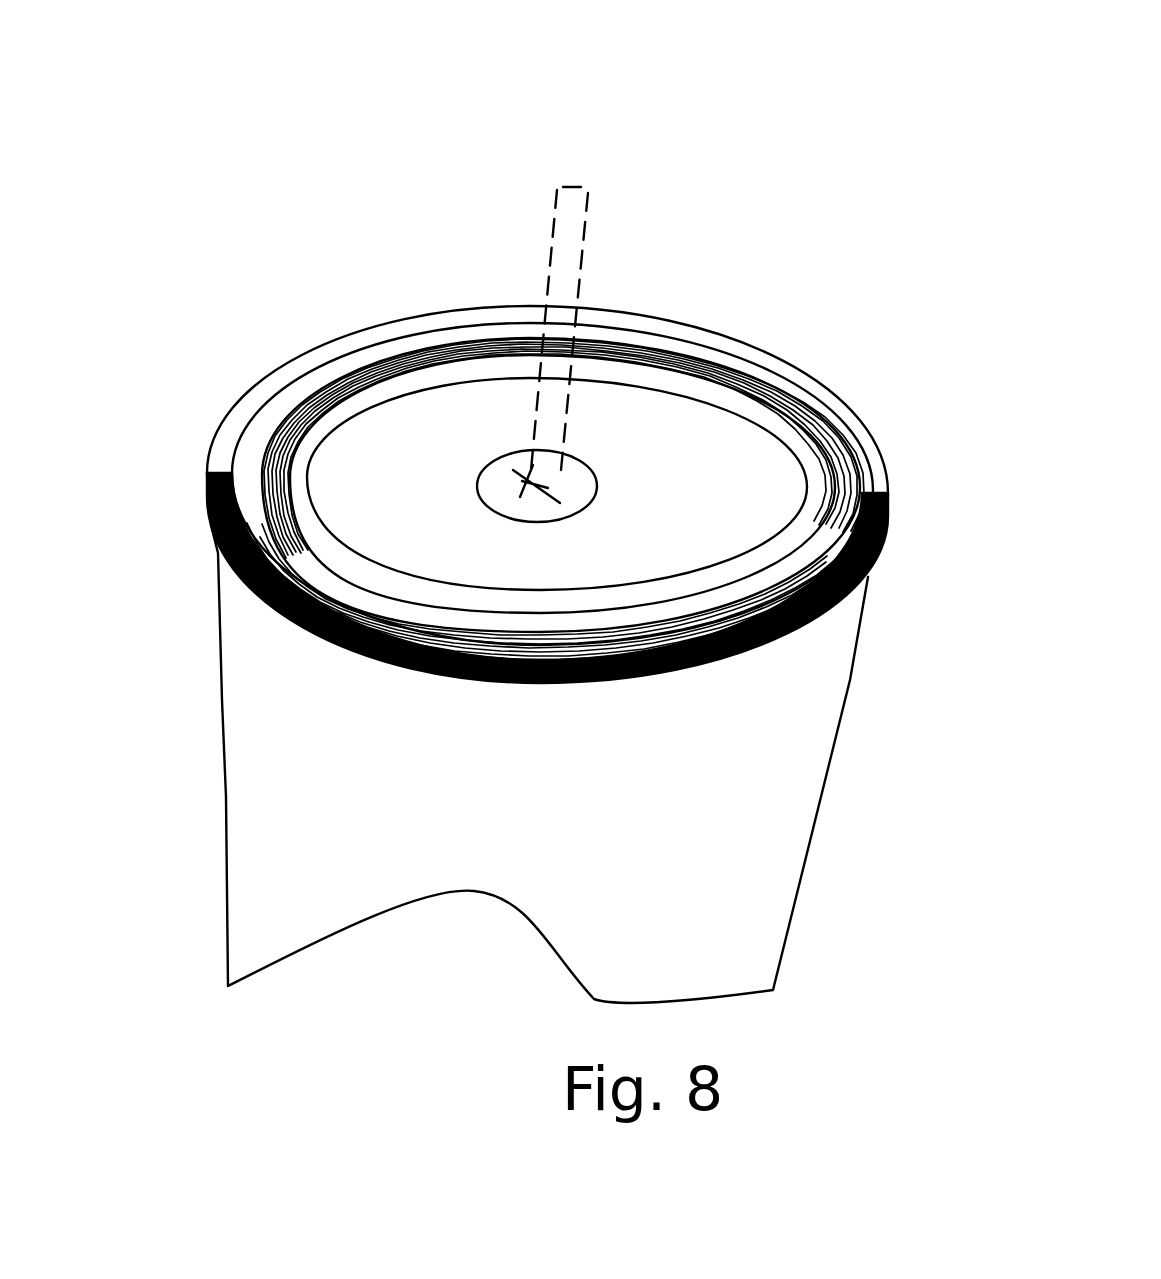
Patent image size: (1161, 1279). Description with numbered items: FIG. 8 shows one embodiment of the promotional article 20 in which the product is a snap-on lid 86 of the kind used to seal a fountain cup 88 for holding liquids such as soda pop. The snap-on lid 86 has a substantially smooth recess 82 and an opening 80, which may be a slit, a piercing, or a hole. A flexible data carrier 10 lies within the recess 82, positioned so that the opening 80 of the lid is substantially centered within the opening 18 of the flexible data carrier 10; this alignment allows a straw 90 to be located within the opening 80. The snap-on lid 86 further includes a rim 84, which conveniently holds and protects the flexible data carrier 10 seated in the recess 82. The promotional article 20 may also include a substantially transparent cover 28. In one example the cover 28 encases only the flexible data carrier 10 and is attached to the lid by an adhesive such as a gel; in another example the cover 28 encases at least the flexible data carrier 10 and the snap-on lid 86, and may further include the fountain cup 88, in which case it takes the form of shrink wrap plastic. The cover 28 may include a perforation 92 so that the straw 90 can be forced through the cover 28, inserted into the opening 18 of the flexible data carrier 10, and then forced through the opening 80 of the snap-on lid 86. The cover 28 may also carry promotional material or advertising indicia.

The flexible data carrier 10 is at (708, 481).
The opening of the flexible data carrier 18 is at (584, 472).
The promotional article 20 is at (512, 509).
The substantially transparent cover 28 is at (480, 448).
The opening 80 is at (450, 368).
The recess 82 is at (808, 545).
The rim 84 is at (235, 413).
The snap-on lid 86 is at (220, 430).
The fountain cup 88 is at (810, 841).
The straw 90 is at (613, 326).
The perforation 92 is at (516, 448).